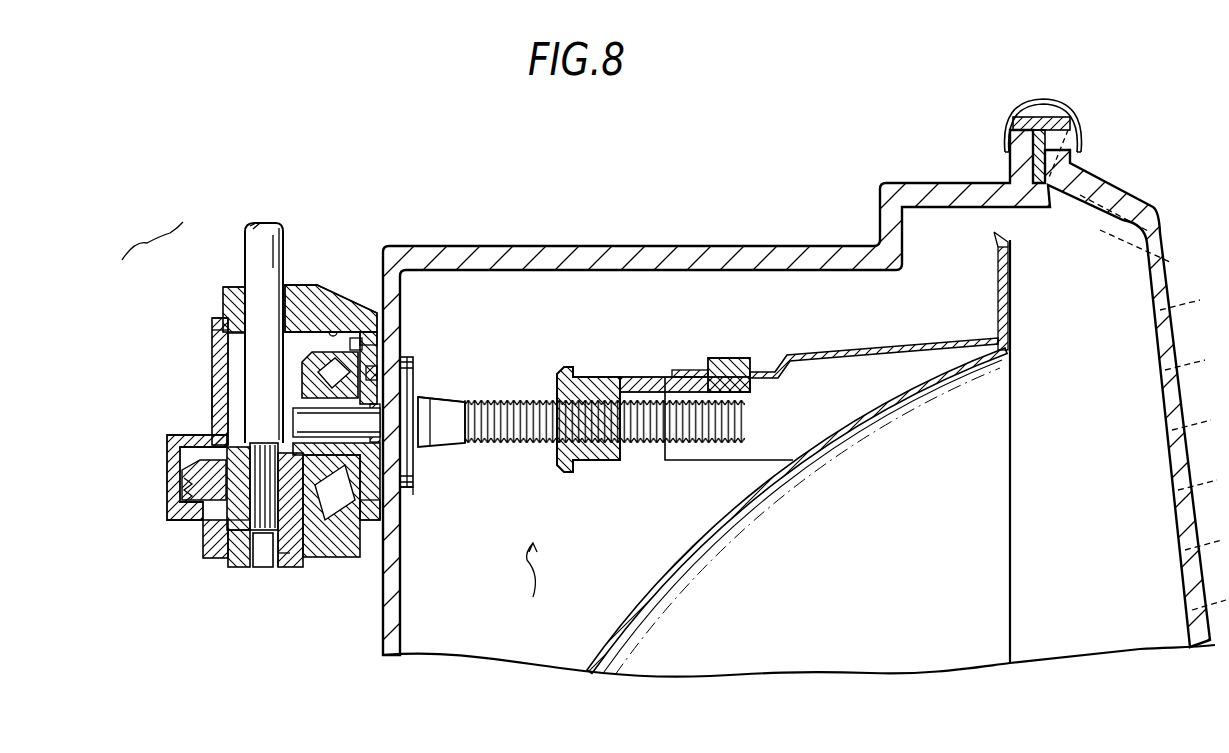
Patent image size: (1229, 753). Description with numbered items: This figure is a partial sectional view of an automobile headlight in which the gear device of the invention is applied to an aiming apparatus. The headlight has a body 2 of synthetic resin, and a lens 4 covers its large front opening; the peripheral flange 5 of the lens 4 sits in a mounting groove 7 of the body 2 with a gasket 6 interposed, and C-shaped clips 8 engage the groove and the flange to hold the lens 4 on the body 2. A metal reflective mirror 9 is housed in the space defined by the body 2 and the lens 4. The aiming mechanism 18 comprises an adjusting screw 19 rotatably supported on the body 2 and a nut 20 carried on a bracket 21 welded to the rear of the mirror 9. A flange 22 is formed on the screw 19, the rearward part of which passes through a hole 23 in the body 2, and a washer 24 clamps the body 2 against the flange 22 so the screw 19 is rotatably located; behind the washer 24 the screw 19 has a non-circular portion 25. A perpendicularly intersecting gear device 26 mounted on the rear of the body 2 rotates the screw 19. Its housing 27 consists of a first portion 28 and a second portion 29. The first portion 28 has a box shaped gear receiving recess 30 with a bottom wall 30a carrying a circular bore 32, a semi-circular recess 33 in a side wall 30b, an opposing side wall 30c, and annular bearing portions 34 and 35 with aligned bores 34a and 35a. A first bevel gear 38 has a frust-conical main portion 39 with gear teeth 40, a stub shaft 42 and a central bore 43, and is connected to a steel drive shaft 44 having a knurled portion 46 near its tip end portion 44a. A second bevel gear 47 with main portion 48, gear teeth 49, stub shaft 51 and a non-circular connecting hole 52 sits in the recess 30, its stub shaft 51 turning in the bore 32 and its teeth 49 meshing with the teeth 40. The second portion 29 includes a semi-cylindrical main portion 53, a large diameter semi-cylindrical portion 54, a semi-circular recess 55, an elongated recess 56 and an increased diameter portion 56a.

The body 2 is at (678, 253).
The lens 4 is at (1163, 323).
The peripheral flange 5 is at (1067, 157).
The gasket 6 is at (1030, 157).
The mounting groove 7 is at (1040, 133).
The C-shaped clip 8 is at (1047, 103).
The reflective mirror 9 is at (698, 543).
The aiming mechanism 18 is at (532, 585).
The adjusting screw 19 is at (537, 397).
The nut 20 is at (623, 380).
The bracket 21 is at (883, 353).
The flange 22 is at (403, 397).
The hole 23 is at (390, 430).
The washer 24 is at (400, 490).
The non-circular portion 25 is at (308, 413).
The perpendicularly intersecting gear device 26 is at (305, 277).
The housing 27 is at (152, 231).
The first portion 28 is at (227, 287).
The second portion 29 is at (210, 330).
The gear receiving recess 30 is at (377, 323).
The bottom wall 30a is at (370, 333).
The side wall 30b is at (340, 520).
The side wall 30c is at (338, 330).
The circular bore 32 is at (370, 412).
The semi-circular recess 33 is at (320, 547).
The bearing portion 34 is at (278, 563).
The bore 34a is at (278, 553).
The bearing portion 35 is at (237, 287).
The bore 35a is at (285, 275).
The first bevel gear 38 is at (197, 473).
The main portion 39 is at (210, 500).
The gear teeth 40 is at (195, 497).
The stub shaft 42 is at (227, 553).
The central bore 43 is at (277, 537).
The drive shaft 44 is at (250, 235).
The tip end portion 44a is at (267, 553).
The knurled portion 46 is at (233, 537).
The second bevel gear 47 is at (358, 345).
The main portion 48 is at (370, 373).
The gear teeth 49 is at (331, 347).
The stub shaft 51 is at (390, 440).
The non-circular connecting hole 52 is at (370, 423).
The main portion 53 is at (213, 393).
The large diameter semi-cylindrical portion 54 is at (183, 457).
The semi-circular recess 55 is at (223, 523).
The elongated recess 56 is at (215, 366).
The increased diameter portion 56a is at (227, 320).